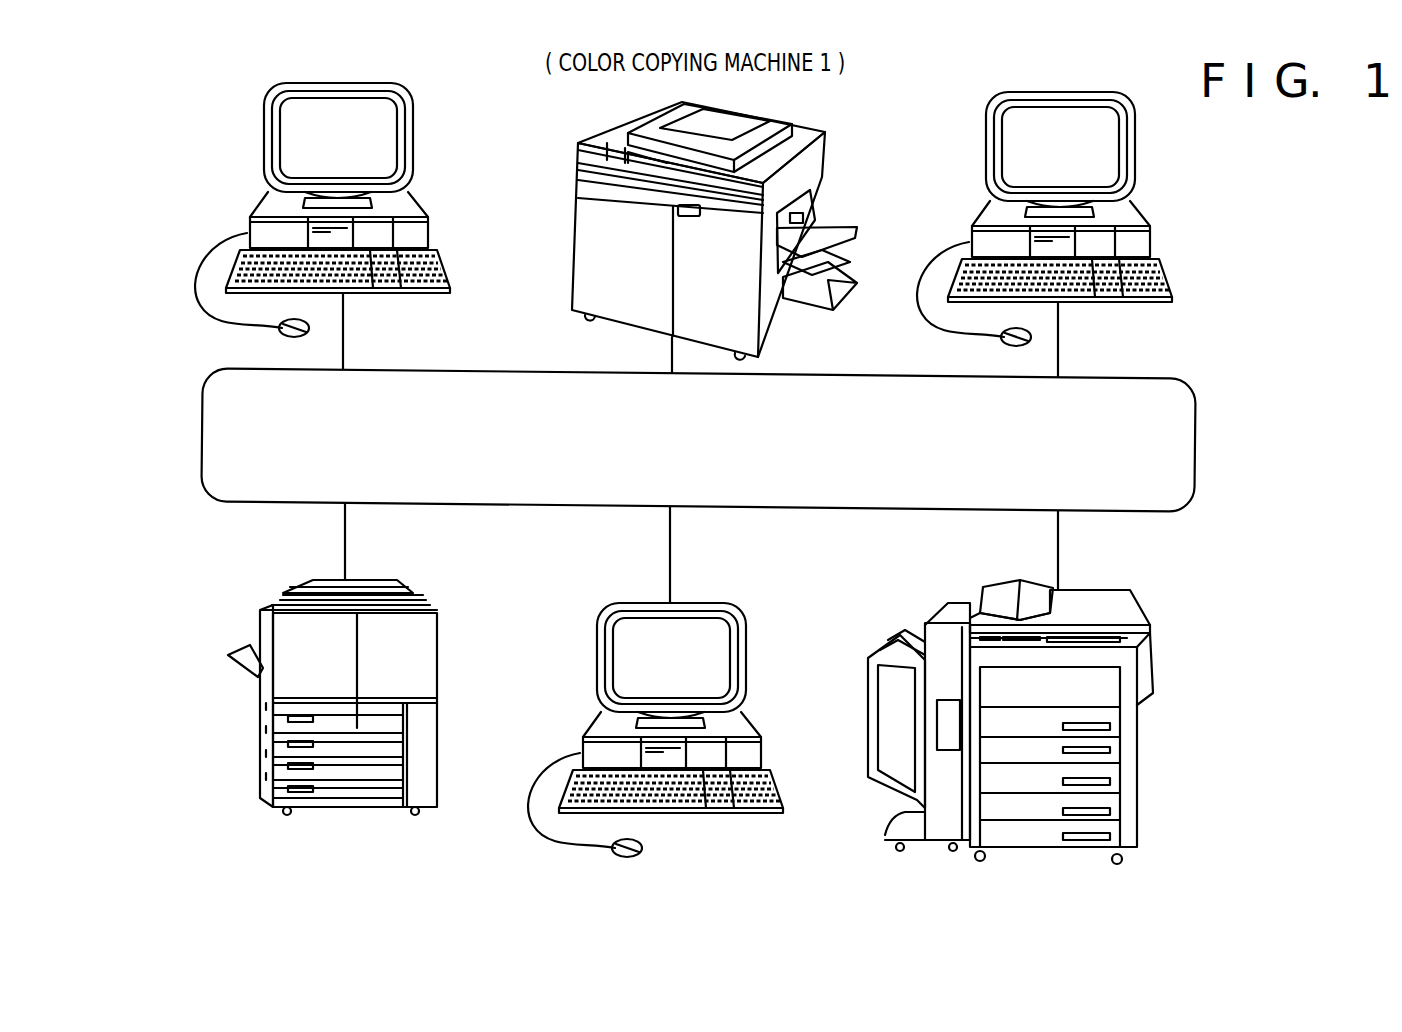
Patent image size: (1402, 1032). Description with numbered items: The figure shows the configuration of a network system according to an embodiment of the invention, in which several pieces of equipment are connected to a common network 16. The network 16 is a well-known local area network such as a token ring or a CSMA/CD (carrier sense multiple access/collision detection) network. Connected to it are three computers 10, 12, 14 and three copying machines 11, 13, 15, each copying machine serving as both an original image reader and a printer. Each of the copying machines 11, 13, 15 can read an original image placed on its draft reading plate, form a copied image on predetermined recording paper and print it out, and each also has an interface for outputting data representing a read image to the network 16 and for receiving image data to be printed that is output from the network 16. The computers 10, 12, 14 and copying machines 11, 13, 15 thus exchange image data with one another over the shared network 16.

The computer 10 is at (262, 127).
The copying machine 11 is at (597, 130).
The computer 12 is at (1138, 168).
The copying machine 13 is at (262, 674).
The computer 14 is at (738, 608).
The copying machine 15 is at (1153, 673).
The network 16 is at (208, 504).